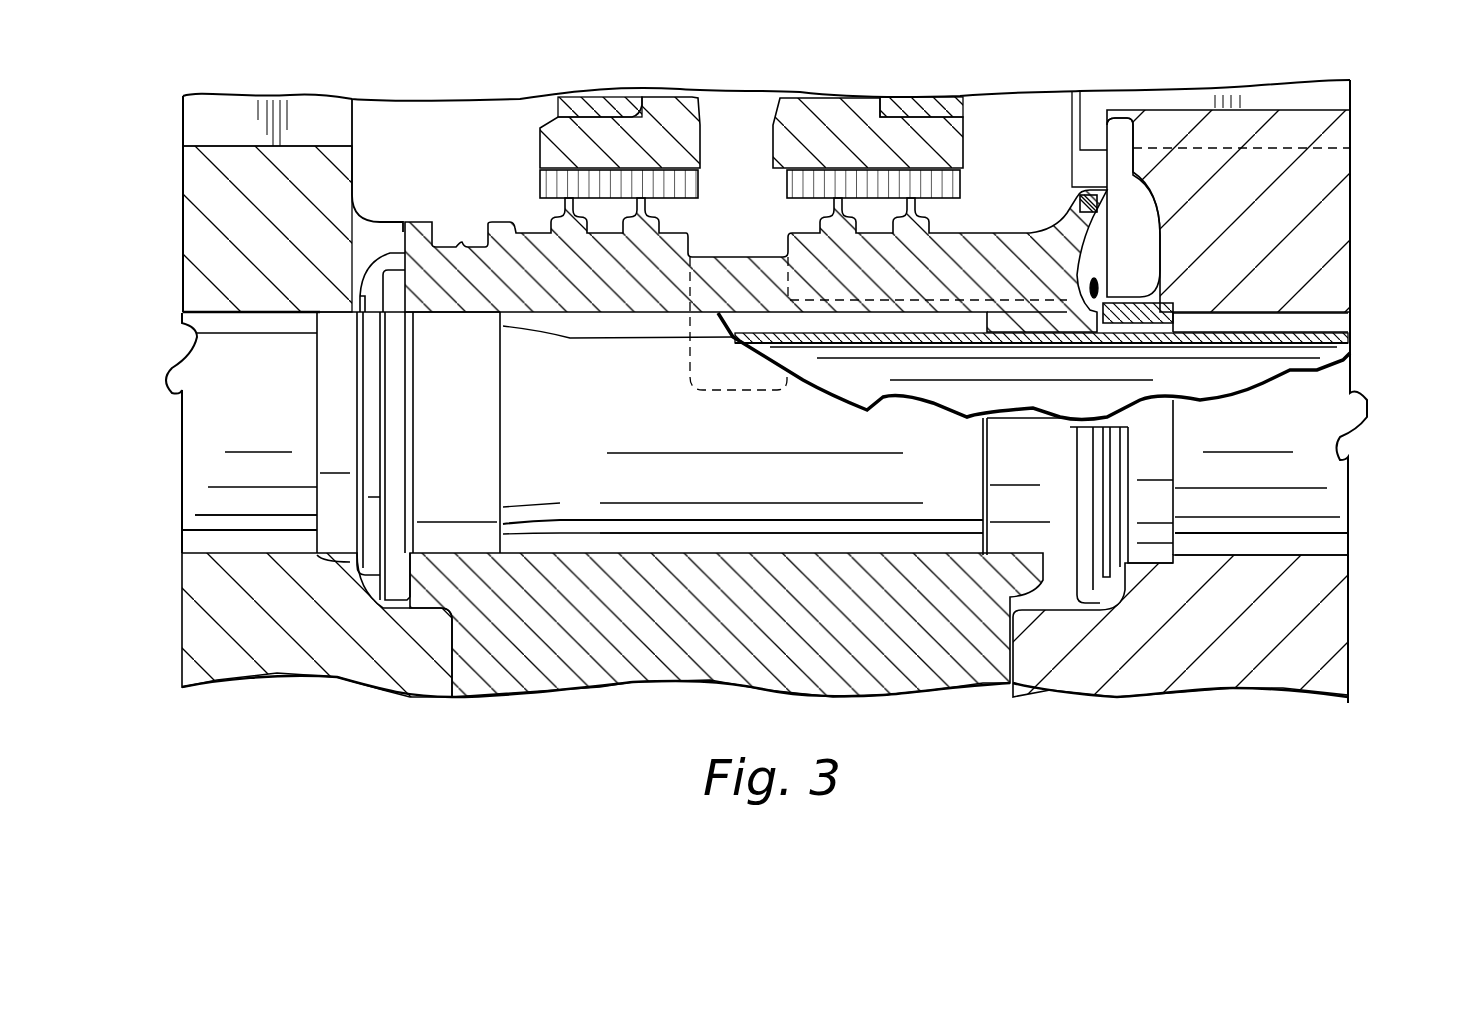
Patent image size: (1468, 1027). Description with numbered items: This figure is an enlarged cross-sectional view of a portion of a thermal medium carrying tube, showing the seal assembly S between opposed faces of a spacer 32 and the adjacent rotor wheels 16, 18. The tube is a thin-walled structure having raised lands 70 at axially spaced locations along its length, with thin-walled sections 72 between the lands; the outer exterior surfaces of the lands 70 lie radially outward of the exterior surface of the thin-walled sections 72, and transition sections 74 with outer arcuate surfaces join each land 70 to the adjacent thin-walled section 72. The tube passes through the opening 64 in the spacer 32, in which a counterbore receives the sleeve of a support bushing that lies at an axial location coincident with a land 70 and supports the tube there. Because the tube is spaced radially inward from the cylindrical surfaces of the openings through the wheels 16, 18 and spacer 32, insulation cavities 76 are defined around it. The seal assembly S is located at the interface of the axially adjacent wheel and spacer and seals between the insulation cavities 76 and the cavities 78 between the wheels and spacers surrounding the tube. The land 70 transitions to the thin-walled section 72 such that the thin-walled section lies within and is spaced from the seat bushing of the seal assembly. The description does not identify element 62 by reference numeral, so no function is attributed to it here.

The wheel 16 is at (290, 680).
The wheel 18 is at (1157, 677).
The spacer 32 is at (550, 665).
The cooling passage 62 is at (237, 552).
The opening 64 is at (833, 552).
The raised land 70 is at (1040, 330).
The thin-walled section 72 is at (840, 333).
The transition section 74 is at (970, 332).
The insulation cavity 76 is at (1310, 327).
The cavity 78 is at (1140, 223).
The seal assembly S is at (1098, 262).